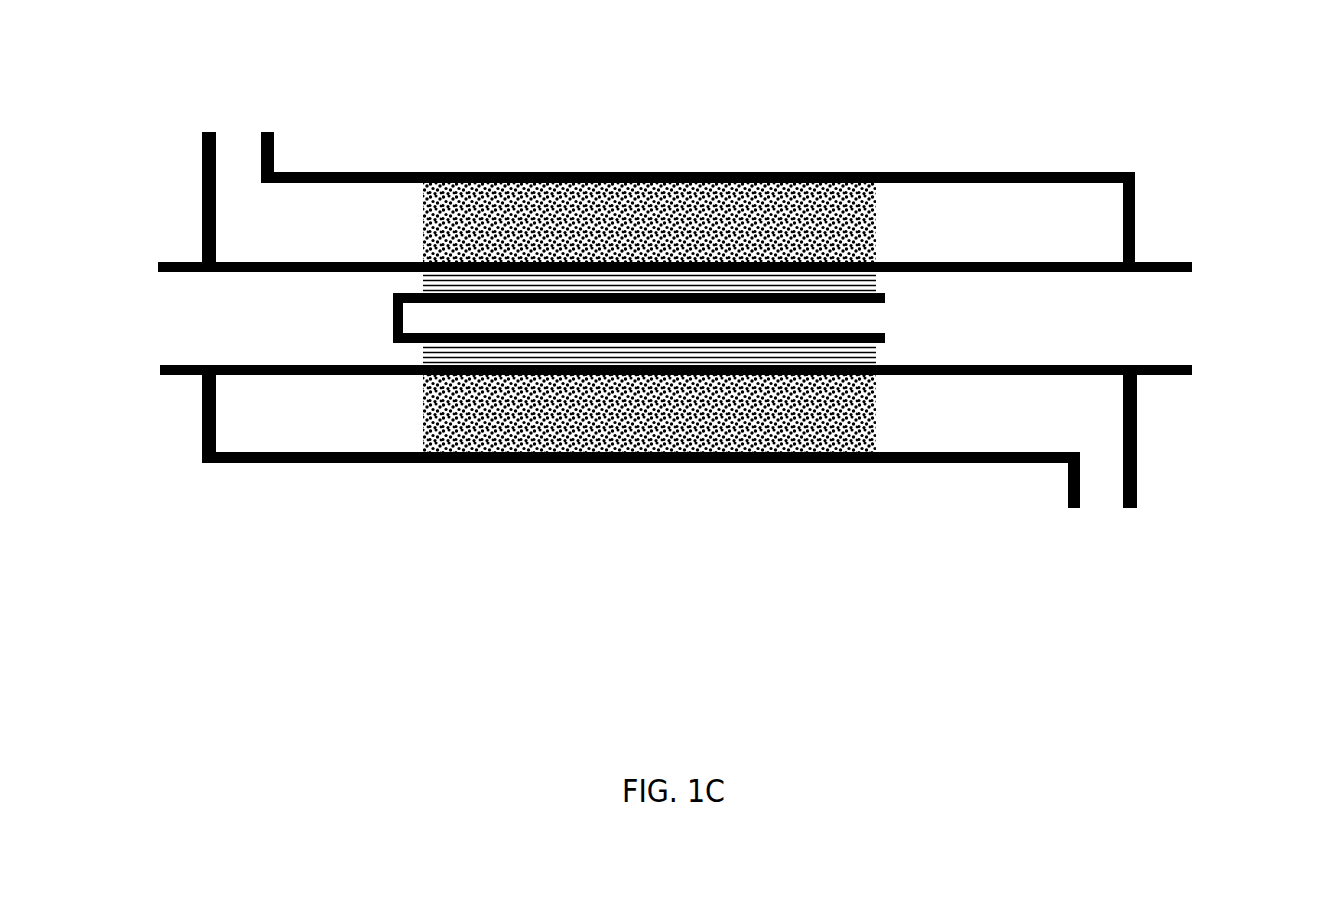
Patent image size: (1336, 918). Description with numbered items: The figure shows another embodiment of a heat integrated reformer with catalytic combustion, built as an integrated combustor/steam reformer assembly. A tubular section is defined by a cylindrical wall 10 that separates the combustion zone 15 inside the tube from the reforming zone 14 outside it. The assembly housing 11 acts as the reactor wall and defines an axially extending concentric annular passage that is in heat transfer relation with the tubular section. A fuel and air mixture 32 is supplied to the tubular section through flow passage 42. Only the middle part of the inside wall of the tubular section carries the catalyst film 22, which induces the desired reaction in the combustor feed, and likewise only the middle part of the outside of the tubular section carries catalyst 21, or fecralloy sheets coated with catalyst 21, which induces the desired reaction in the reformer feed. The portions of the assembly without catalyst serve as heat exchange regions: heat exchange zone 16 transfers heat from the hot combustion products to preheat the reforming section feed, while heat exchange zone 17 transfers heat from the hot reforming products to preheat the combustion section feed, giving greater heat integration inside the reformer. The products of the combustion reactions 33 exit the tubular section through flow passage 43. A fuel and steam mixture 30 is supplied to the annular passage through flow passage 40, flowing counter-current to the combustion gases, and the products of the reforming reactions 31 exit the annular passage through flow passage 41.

The cylindrical wall 10 is at (1073, 250).
The assembly housing 11 is at (843, 170).
The reforming zone 14 is at (778, 220).
The combustion zone 15 is at (535, 314).
The heat exchange zone 16 is at (1022, 223).
The heat exchange zone 17 is at (307, 223).
The catalyst 21 is at (685, 385).
The catalyst film 22 is at (466, 350).
The fuel and steam mixture 30 is at (1100, 484).
The products of the reforming reactions 31 is at (235, 157).
The fuel and air mixture 32 is at (250, 329).
The products of the combustion reactions 33 is at (1095, 325).
The flow passage 40 is at (1090, 497).
The flow passage 41 is at (247, 135).
The flow passage 42 is at (162, 350).
The flow passage 43 is at (1178, 346).